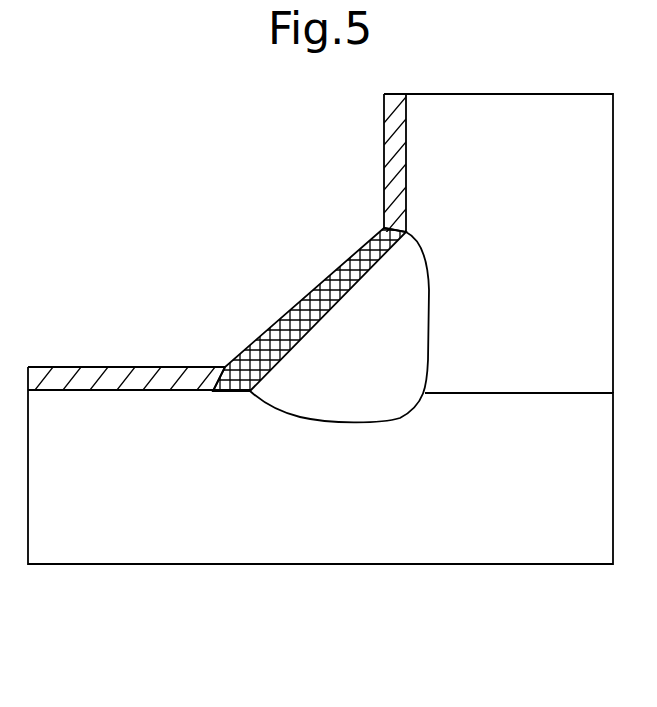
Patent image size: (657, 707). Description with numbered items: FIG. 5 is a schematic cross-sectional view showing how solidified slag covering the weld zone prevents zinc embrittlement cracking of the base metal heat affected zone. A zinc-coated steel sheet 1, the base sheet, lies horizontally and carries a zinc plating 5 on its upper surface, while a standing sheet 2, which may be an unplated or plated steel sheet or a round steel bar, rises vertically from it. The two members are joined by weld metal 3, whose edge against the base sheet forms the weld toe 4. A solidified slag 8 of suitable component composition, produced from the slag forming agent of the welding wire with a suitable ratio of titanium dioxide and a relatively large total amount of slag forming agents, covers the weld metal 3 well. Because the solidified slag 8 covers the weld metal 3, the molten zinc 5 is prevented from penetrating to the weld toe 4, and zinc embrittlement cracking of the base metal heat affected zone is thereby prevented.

The zinc-coated steel sheet 1 is at (320, 465).
The standing sheet 2 is at (498, 243).
The weld metal 3 is at (339, 327).
The weld toe 4 is at (223, 377).
The zinc plating 5 is at (126, 363).
The solidified slag 8 is at (310, 310).